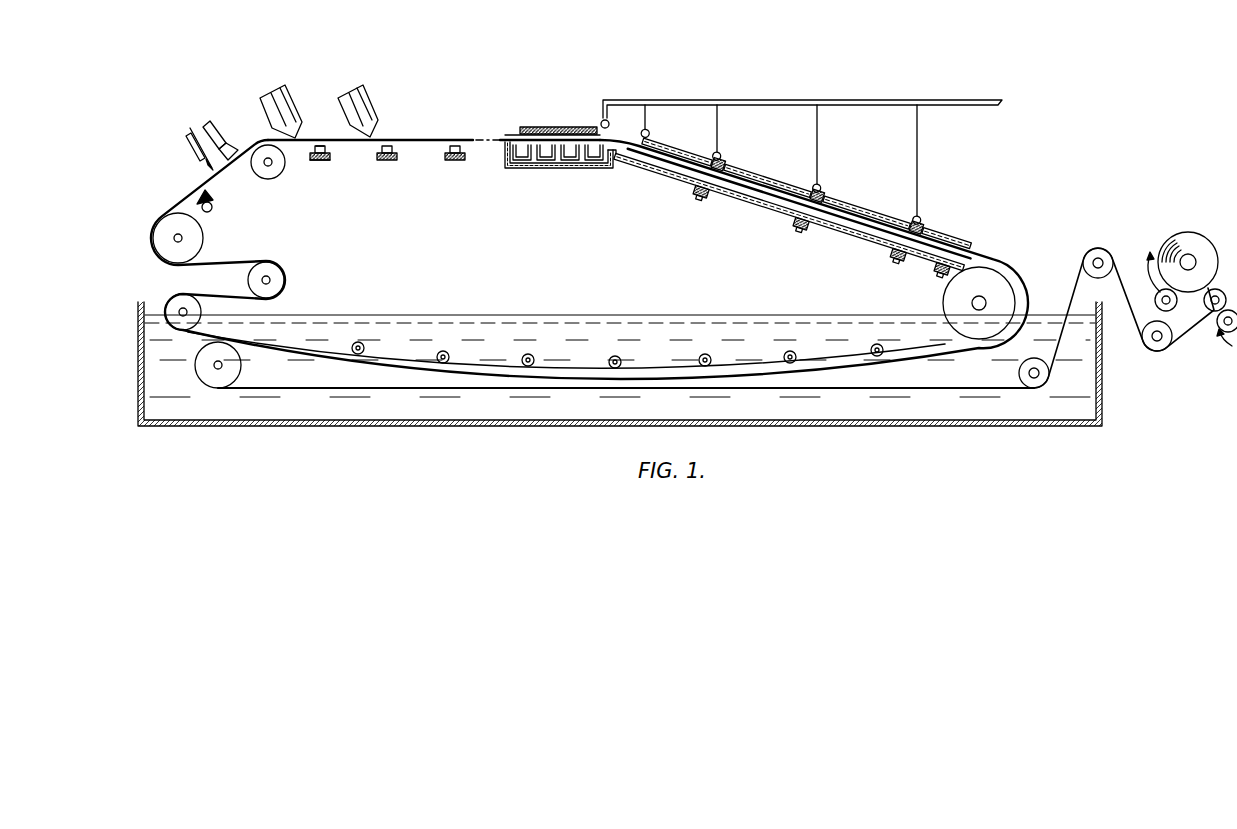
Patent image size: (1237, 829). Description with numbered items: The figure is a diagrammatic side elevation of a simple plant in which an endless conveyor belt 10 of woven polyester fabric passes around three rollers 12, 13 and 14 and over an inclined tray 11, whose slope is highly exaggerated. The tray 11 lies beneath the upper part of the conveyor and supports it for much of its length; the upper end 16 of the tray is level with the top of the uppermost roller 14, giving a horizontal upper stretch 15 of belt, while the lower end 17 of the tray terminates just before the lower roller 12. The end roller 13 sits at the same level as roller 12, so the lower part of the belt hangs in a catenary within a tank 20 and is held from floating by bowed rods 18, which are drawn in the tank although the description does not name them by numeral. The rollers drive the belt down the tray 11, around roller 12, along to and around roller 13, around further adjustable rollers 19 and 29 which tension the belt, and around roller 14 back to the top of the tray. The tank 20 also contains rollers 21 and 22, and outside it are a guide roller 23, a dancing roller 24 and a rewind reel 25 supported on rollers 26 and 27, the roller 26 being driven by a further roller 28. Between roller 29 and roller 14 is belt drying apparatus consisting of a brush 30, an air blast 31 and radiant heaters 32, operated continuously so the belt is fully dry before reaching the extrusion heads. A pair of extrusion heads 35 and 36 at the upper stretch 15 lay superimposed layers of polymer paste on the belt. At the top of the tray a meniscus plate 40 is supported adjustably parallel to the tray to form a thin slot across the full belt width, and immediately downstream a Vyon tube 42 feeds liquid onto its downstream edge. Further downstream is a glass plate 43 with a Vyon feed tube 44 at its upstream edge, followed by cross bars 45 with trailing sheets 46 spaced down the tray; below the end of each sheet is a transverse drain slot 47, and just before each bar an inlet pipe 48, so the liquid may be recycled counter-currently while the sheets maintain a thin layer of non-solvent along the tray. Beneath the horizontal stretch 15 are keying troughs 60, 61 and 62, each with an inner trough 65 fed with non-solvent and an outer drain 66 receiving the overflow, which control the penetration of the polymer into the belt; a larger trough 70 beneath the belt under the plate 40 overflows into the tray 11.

The endless conveyor belt 10 is at (245, 262).
The inclined tray 11 is at (740, 196).
The lower roller 12 is at (998, 286).
The end roller 13 is at (178, 293).
The uppermost roller 14 is at (268, 181).
The horizontal upper stretch 15 is at (432, 145).
The upper end of the tray 16 is at (612, 162).
The lower end of the tray 17 is at (976, 246).
The guide rollers 18 is at (440, 352).
The adjustable roller 19 is at (285, 284).
The tank 20 is at (180, 428).
The roller 21 is at (1049, 384).
The roller 22 is at (196, 371).
The guide roller 23 is at (1084, 256).
The dancing roller 24 is at (1146, 349).
The rewind reel 25 is at (1190, 233).
The roller 26 is at (1206, 334).
The roller 27 is at (1147, 275).
The further roller 28 is at (1226, 346).
The adjustable roller 29 is at (203, 245).
The brush 30 is at (196, 195).
The air blast 31 is at (190, 128).
The radiant heaters 32 is at (222, 128).
The extrusion head 35 is at (291, 92).
The extrusion head 36 is at (370, 94).
The meniscus plate 40 is at (545, 127).
The Vyon tube 42 is at (602, 124).
The glass plate 43 is at (690, 156).
The Vyon feed tube 44 is at (648, 133).
The cross bar 45 is at (735, 170).
The trailing sheets 46 is at (783, 192).
The drain slot 47 is at (706, 193).
The inlet pipe 48 is at (720, 157).
The keying trough 60 is at (329, 158).
The keying trough 61 is at (387, 161).
The keying trough 62 is at (455, 161).
The inner trough 65 is at (320, 145).
The outer drain 66 is at (313, 159).
The larger trough 70 is at (540, 168).